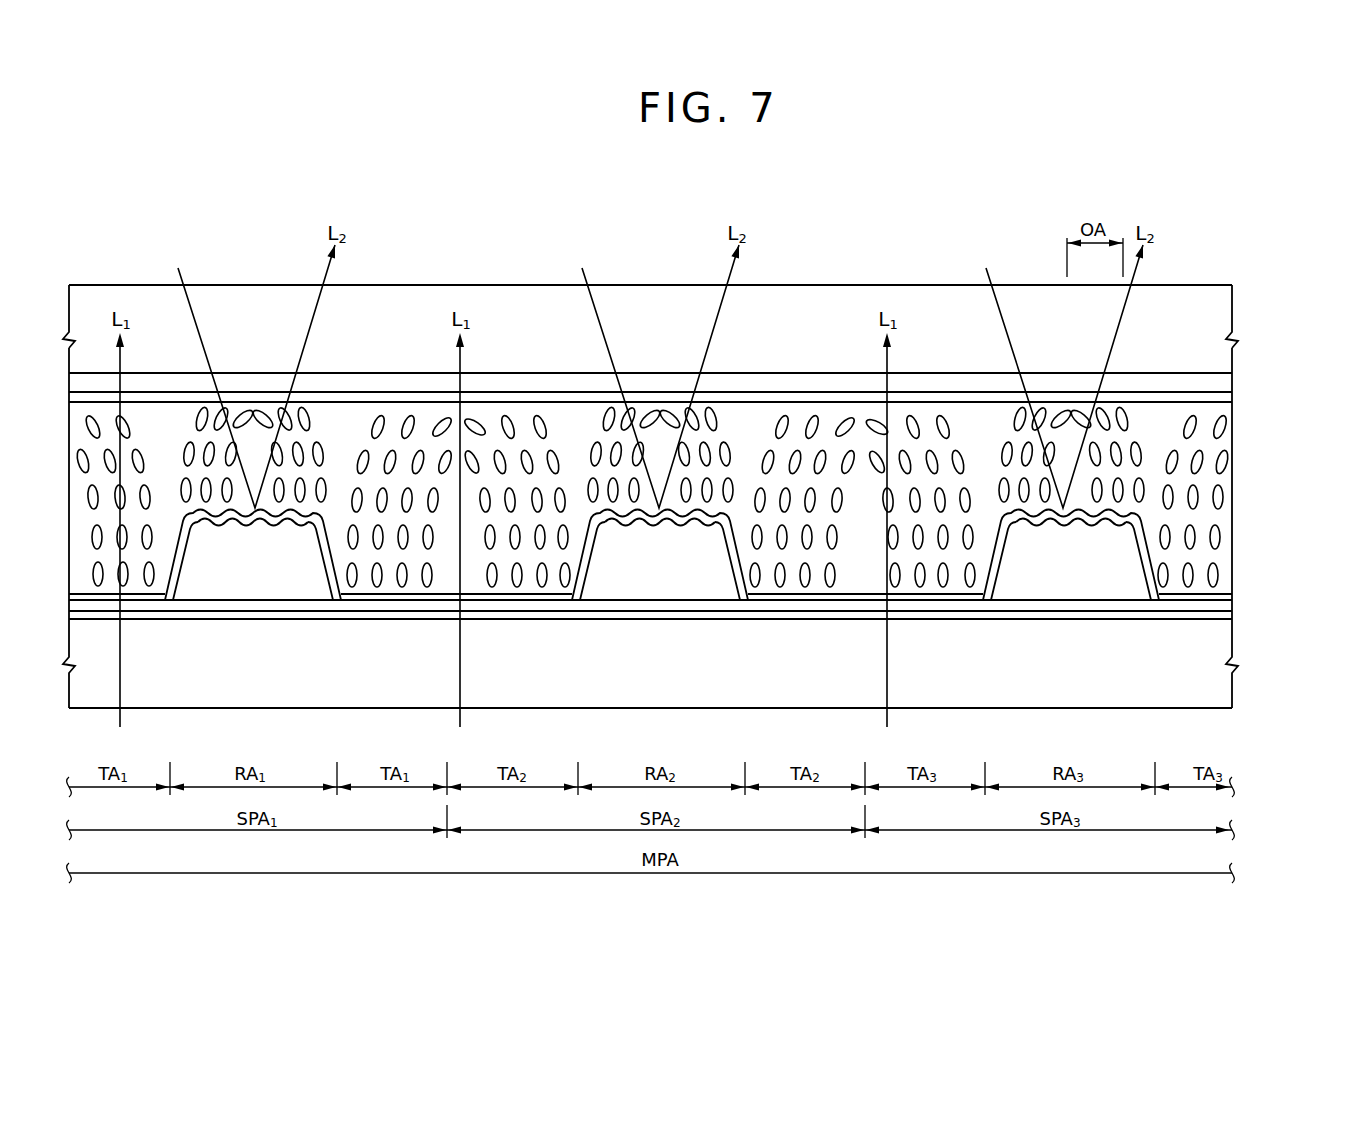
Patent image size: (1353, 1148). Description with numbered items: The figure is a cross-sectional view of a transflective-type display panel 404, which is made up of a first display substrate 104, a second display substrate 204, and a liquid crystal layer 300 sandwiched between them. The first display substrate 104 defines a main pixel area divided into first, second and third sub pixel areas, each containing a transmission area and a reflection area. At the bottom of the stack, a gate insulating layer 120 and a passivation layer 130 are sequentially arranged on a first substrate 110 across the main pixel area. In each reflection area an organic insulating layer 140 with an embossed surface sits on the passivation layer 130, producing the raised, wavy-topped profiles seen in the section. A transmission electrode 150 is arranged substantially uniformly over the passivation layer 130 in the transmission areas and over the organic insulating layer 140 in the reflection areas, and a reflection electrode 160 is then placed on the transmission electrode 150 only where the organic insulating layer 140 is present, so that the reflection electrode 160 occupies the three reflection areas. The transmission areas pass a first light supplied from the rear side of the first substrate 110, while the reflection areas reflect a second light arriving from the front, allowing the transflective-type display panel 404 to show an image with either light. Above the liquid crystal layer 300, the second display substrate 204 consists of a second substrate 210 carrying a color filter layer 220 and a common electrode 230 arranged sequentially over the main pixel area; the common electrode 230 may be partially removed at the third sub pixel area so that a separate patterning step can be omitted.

The transflective-type display panel 404 is at (683, 195).
The second display substrate 204 is at (1297, 297).
The second substrate 210 is at (1226, 311).
The color filter layer 220 is at (1232, 380).
The common electrode 230 is at (1232, 400).
The liquid crystal layer 300 is at (1224, 497).
The first display substrate 104 is at (1297, 565).
The first substrate 110 is at (1232, 681).
The gate insulating layer 120 is at (1232, 612).
The passivation layer 130 is at (1232, 604).
The organic insulating layer 140 is at (1099, 733).
The transmission electrode 150 is at (1232, 596).
The reflection electrode 160 is at (1052, 733).